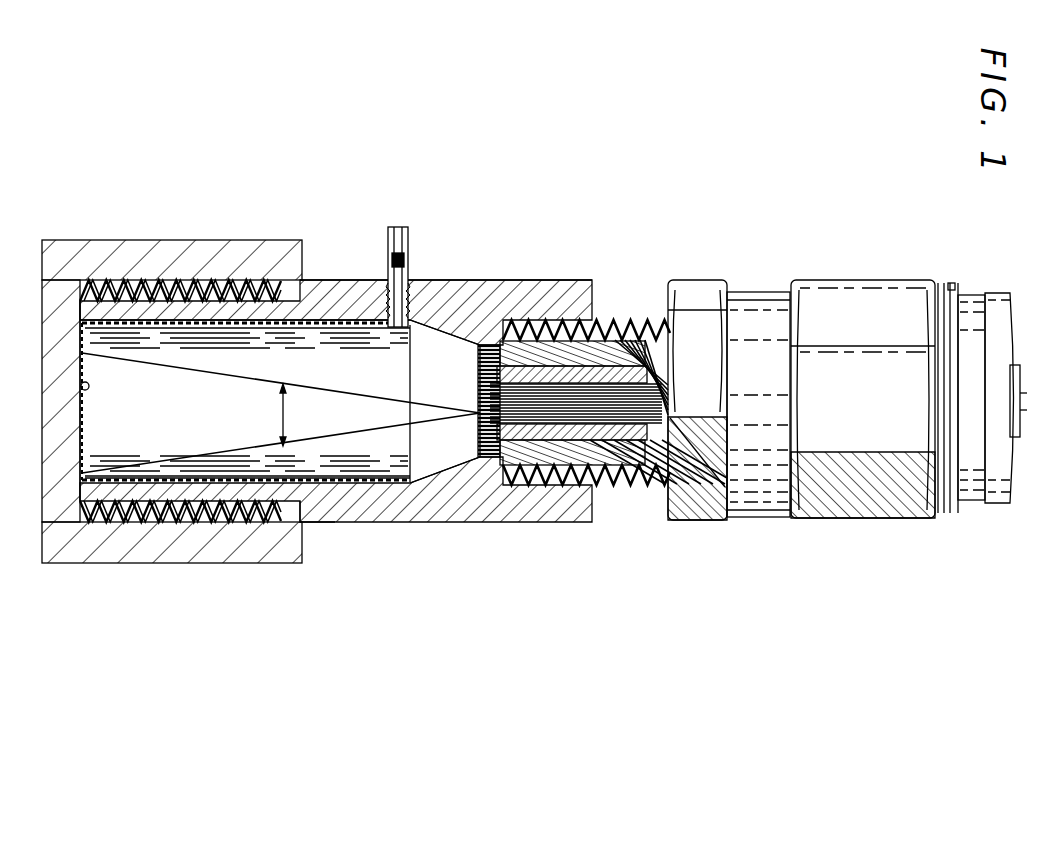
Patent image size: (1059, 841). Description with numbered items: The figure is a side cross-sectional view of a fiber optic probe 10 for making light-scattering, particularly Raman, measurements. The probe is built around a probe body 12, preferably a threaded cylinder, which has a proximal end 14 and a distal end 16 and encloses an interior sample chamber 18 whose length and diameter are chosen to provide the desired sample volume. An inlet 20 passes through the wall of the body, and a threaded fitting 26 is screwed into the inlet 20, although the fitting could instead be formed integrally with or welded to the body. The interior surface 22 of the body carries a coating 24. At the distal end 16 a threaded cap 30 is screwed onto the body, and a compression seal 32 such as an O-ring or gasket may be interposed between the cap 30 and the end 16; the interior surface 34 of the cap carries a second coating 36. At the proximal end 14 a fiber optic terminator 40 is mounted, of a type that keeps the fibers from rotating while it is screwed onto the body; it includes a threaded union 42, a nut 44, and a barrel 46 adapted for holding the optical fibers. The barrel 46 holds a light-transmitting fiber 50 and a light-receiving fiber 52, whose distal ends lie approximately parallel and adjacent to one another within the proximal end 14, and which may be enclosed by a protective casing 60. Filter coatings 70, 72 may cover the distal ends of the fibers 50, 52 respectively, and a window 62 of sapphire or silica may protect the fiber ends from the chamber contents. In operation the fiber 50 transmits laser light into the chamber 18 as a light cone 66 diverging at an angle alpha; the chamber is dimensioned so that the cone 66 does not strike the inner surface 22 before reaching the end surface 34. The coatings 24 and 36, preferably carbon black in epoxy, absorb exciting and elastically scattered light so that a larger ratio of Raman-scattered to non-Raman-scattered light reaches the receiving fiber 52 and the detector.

The fiber optic probe 10 is at (621, 232).
The probe body 12 is at (483, 528).
The proximal end 14 is at (556, 282).
The distal end 16 is at (308, 526).
The interior sample chamber 18 is at (338, 350).
The inlet 20 is at (409, 276).
The interior surface 22 is at (226, 333).
The coating 24 is at (376, 483).
The threaded fitting 26 is at (386, 262).
The threaded cap 30 is at (140, 240).
The compression seal 32 is at (84, 284).
The interior surface of cap 34 is at (82, 442).
The coating 36 is at (80, 387).
The fiber optic terminator 40 is at (863, 395).
The threaded union 42 is at (597, 472).
The nut 44 is at (827, 520).
The barrel 46 is at (758, 292).
The light-transmitting fiber 50 is at (1023, 412).
The light-receiving fiber 52 is at (1022, 393).
The protective casing 60 is at (1022, 440).
The window 62 is at (480, 352).
The light cone 66 is at (178, 460).
The coating 70 is at (480, 418).
The coating 72 is at (487, 344).